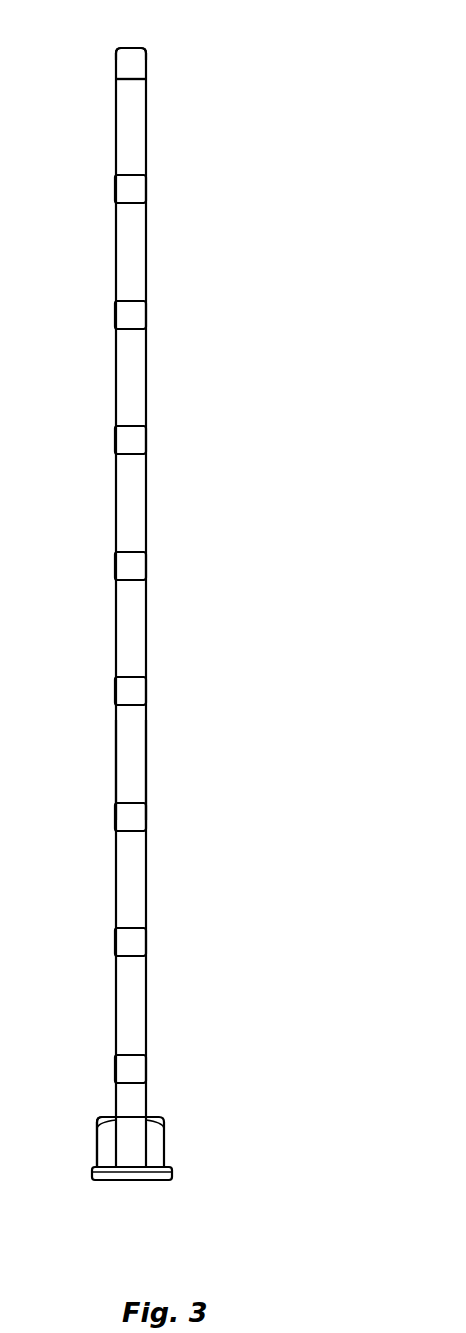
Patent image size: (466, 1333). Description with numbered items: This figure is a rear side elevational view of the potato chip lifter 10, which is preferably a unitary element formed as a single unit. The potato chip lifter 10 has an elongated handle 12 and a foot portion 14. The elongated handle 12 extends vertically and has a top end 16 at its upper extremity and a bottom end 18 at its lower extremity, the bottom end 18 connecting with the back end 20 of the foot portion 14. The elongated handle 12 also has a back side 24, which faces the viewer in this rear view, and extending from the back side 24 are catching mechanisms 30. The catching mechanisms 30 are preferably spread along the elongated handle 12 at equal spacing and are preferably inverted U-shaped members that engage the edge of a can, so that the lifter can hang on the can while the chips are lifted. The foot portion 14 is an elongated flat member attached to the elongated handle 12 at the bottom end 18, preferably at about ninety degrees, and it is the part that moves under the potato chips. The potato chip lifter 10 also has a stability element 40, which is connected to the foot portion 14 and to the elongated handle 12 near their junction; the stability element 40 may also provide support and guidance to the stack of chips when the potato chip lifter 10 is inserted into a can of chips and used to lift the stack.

The potato chip lifter 10 is at (285, 101).
The elongated handle 12 is at (147, 640).
The foot portion 14 is at (172, 1175).
The top end 16 is at (121, 49).
The bottom end 18 is at (165, 1140).
The back end 20 is at (125, 1182).
The back side 24 is at (142, 765).
The catching mechanisms 30 is at (140, 436).
The stability element 40 is at (97, 1143).